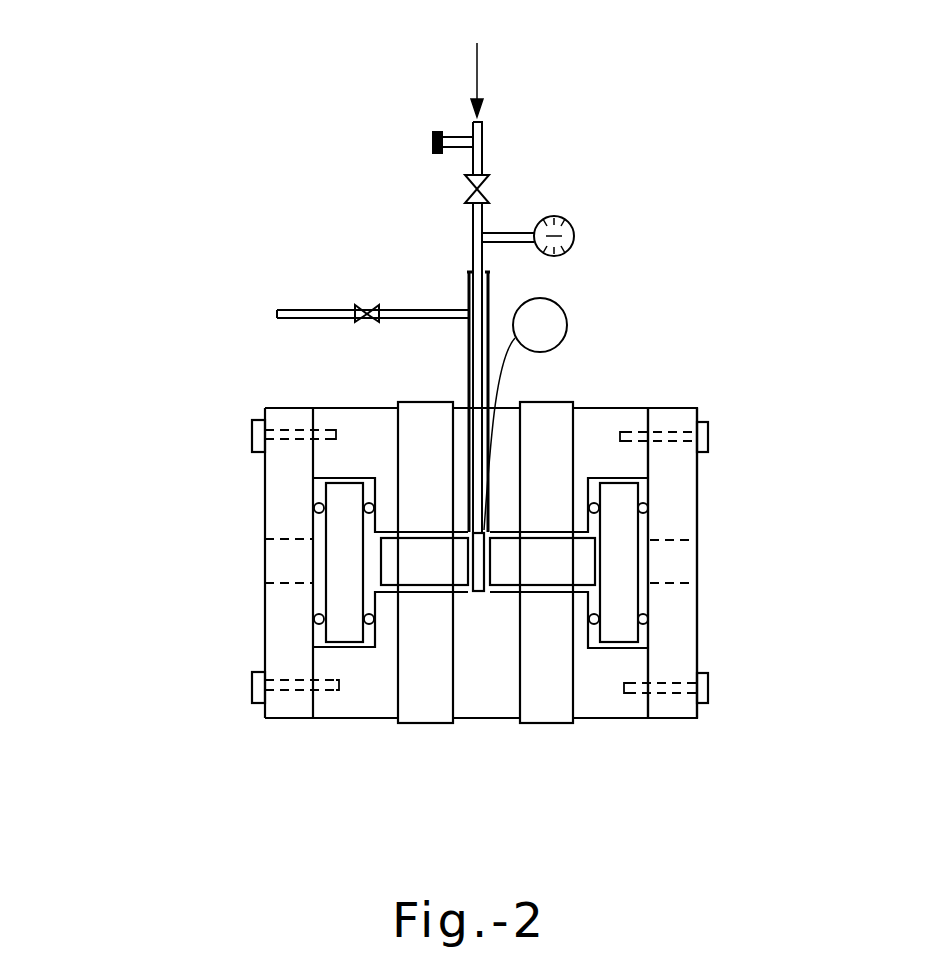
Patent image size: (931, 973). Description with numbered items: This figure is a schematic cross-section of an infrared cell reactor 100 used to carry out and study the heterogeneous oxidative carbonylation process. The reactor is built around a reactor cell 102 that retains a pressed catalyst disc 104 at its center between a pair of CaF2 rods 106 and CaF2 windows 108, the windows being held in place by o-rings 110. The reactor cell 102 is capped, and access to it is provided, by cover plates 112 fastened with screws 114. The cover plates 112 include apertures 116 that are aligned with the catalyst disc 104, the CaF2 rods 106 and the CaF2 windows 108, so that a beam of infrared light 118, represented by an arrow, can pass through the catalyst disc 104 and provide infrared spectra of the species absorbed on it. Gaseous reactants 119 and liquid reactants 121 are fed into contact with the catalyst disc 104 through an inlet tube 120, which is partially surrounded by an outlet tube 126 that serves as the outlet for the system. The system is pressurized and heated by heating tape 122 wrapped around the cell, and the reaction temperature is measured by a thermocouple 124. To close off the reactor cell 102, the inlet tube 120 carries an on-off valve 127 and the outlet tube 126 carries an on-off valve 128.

The infrared cell reactor 100 is at (241, 396).
The reactor cell 102 is at (608, 418).
The pressed catalyst disc 104 is at (480, 593).
The CaF2 rods 106 is at (378, 577).
The CaF2 windows 108 is at (628, 592).
The o-rings 110 is at (318, 508).
The cover plates 112 is at (697, 477).
The screws 114 is at (665, 688).
The apertures 116 is at (676, 578).
The beam of infrared light 118 is at (714, 566).
The gaseous reactants 119 is at (484, 62).
The inlet tube 120 is at (483, 142).
The liquid reactants 121 is at (414, 143).
The heating tape 122 is at (553, 722).
The thermocouple 124 is at (562, 307).
The outlet tube 126 is at (467, 305).
The on-off valve 127 is at (483, 190).
The on-off valve 128 is at (367, 303).